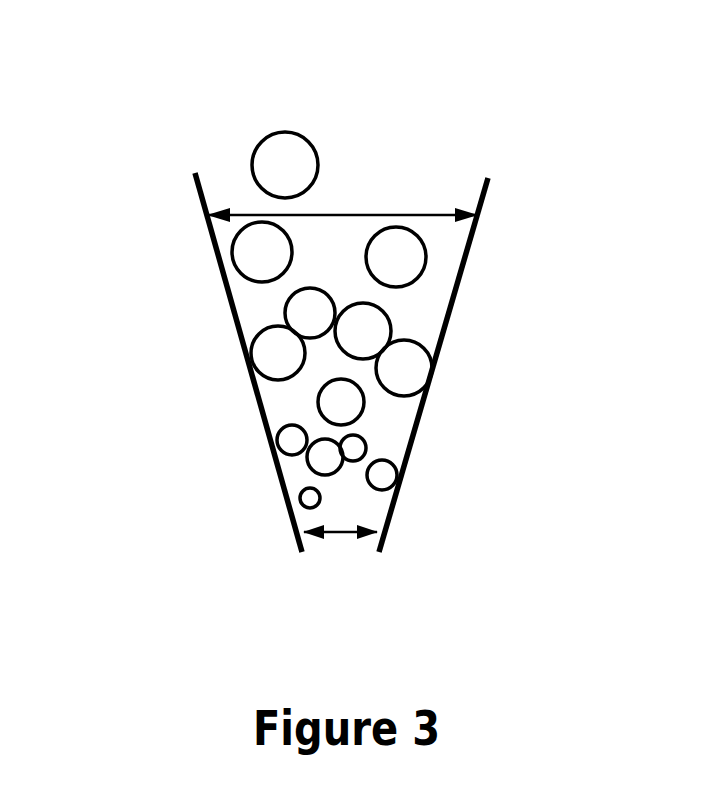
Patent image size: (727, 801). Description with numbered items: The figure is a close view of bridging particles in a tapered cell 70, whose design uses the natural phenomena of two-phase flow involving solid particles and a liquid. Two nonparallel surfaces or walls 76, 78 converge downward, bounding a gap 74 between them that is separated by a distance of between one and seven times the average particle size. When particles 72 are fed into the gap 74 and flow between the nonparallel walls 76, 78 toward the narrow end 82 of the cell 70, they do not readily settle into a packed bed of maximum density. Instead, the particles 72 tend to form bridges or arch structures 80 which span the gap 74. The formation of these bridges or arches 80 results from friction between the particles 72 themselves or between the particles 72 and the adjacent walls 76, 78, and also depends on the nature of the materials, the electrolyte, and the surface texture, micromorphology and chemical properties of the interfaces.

The tapered cell 70 is at (130, 110).
The particles 72 is at (283, 165).
The gap 74 is at (342, 205).
The wall 76 is at (228, 298).
The wall 78 is at (467, 265).
The bridges or arch structures 80 is at (420, 331).
The narrow end 82 is at (340, 521).